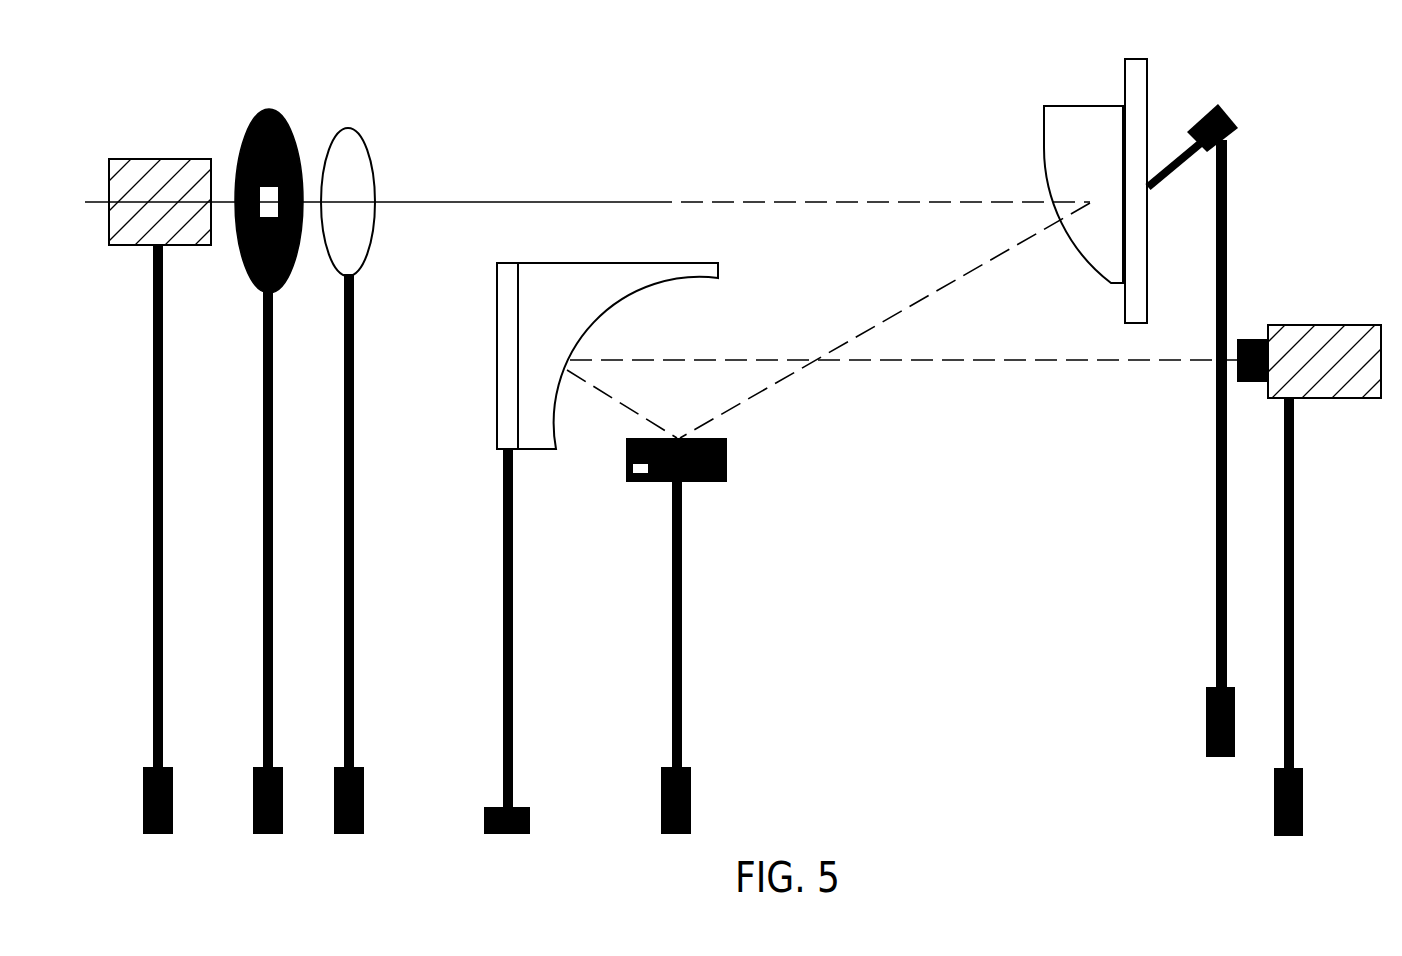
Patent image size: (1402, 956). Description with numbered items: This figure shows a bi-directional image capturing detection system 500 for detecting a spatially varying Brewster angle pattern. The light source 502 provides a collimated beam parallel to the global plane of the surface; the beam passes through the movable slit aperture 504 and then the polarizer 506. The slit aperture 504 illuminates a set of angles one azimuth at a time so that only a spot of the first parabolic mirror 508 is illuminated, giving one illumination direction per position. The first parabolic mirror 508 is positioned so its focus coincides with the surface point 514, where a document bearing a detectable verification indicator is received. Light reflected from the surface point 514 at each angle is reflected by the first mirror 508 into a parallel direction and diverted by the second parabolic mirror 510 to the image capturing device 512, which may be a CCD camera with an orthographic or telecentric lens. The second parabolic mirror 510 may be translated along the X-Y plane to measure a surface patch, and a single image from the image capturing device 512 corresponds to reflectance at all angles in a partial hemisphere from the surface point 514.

The bi-directional image capturing detection system 500 is at (810, 23).
The light source 502 is at (153, 170).
The slit aperture 504 is at (266, 108).
The polarizer 506 is at (348, 137).
The first parabolic mirror 508 is at (1069, 105).
The second parabolic mirror 510 is at (562, 263).
The image capturing device 512 is at (1335, 343).
The surface point 514 is at (722, 430).